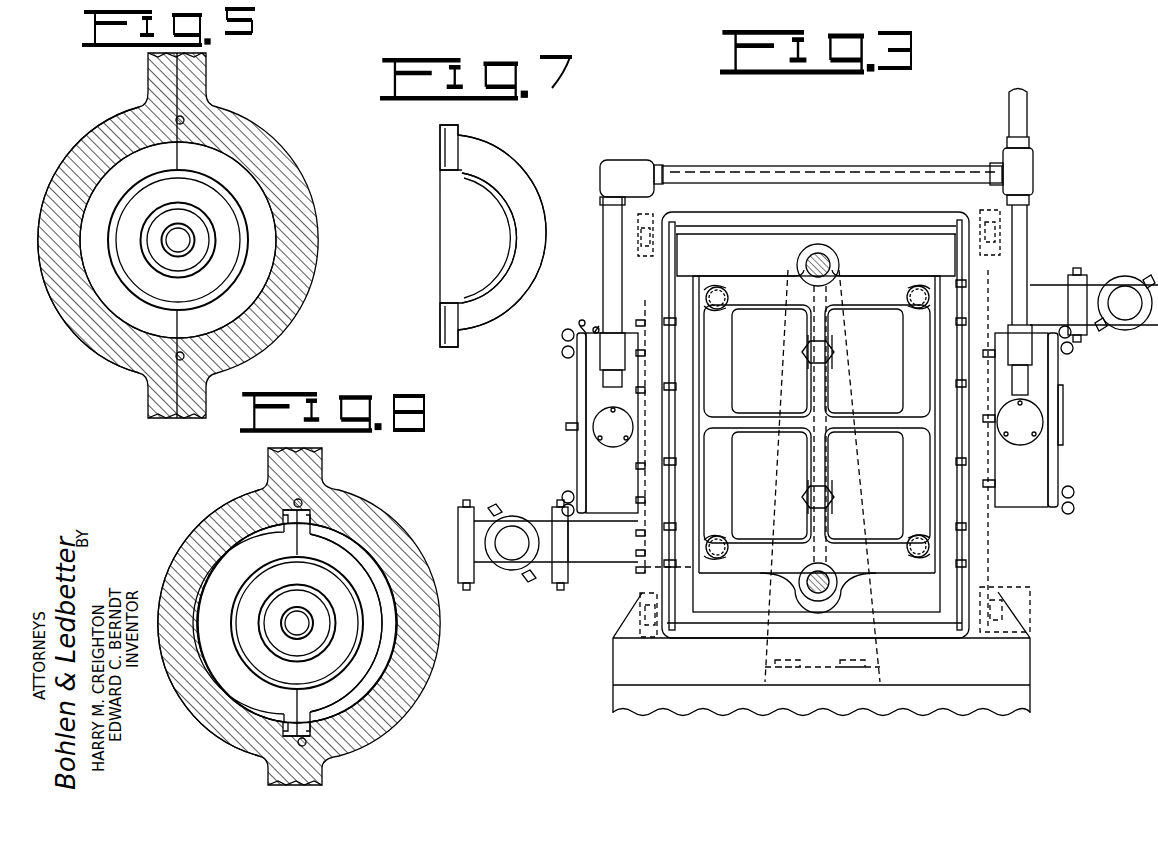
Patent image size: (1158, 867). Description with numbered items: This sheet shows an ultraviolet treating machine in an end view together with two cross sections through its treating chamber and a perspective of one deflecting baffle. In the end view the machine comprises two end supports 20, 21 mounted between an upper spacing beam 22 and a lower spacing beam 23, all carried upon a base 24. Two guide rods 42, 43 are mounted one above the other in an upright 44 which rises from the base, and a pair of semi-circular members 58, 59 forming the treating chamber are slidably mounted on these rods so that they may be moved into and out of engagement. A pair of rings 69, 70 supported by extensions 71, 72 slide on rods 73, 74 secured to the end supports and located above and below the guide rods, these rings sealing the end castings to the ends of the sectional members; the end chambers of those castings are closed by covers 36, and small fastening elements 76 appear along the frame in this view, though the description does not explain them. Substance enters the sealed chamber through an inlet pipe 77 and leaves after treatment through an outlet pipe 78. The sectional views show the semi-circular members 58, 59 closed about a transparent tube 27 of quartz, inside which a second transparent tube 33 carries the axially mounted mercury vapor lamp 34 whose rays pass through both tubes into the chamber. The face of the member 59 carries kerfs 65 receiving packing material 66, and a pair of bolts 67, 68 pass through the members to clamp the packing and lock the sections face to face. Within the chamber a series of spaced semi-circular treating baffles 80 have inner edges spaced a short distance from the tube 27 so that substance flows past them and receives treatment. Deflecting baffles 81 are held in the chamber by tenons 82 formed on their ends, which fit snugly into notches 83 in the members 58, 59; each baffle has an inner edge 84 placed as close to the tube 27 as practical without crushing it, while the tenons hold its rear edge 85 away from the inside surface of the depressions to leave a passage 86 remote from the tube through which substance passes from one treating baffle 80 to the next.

In FIG. 3, the end support 20 is at (657, 600).
In FIG. 3, the end support 21 is at (995, 592).
In FIG. 3, the upper spacing beam 22 is at (736, 188).
In FIG. 3, the lower spacing beam 23 is at (640, 657).
In FIG. 3, the base 24 is at (640, 697).
In FIG. 5, the transparent tube 27 is at (190, 302).
In FIG. 6, the transparent tube 27 is at (310, 690).
In FIG. 5, the tube 33 is at (164, 272).
In FIG. 6, the tube 33 is at (286, 658).
In FIG. 5, the mercury vapor lamp 34 is at (166, 226).
In FIG. 6, the mercury vapor lamp 34 is at (288, 608).
In FIG. 3, the cover 36 is at (577, 396).
In FIG. 3, the guide rod 42 is at (839, 262).
In FIG. 3, the guide rod 43 is at (840, 586).
In FIG. 3, the upright 44 is at (882, 656).
In FIG. 5, the semi-circular member 58 is at (258, 142).
In FIG. 6, the semi-circular member 58 is at (392, 528).
In FIG. 5, the semi-circular member 59 is at (82, 150).
In FIG. 6, the semi-circular member 59 is at (206, 530).
In FIG. 5, the kerf 65 is at (186, 122).
In FIG. 5, the packing material 66 is at (184, 118).
In FIG. 6, the packing material 66 is at (301, 503).
In FIG. 3, the bolt 67 is at (836, 353).
In FIG. 3, the bolt 68 is at (838, 496).
In FIG. 3, the ring 69 is at (692, 335).
In FIG. 3, the ring 70 is at (950, 331).
In FIG. 3, the extension 71 is at (677, 252).
In FIG. 3, the extension 72 is at (957, 246).
In FIG. 3, the rod 73 is at (740, 236).
In FIG. 3, the rod 74 is at (715, 612).
In FIG. 3, the nuts 76 is at (668, 386).
In FIG. 3, the inlet pipe 77 is at (595, 556).
In FIG. 3, the outlet pipe 78 is at (1040, 292).
In FIG. 5, the treating baffle 80 is at (250, 192).
In FIG. 6, the deflecting baffle 81 is at (386, 606).
In FIG. 7, the deflecting baffle 81 is at (493, 175).
In FIG. 6, the tenon 82 is at (282, 519).
In FIG. 7, the tenon 82 is at (458, 133).
In FIG. 6, the notch 83 is at (274, 505).
In FIG. 6, the inner edge 84 is at (362, 571).
In FIG. 7, the inner edge 84 is at (509, 263).
In FIG. 6, the rear edge 85 is at (372, 575).
In FIG. 7, the rear edge 85 is at (546, 254).
In FIG. 6, the passage 86 is at (400, 628).